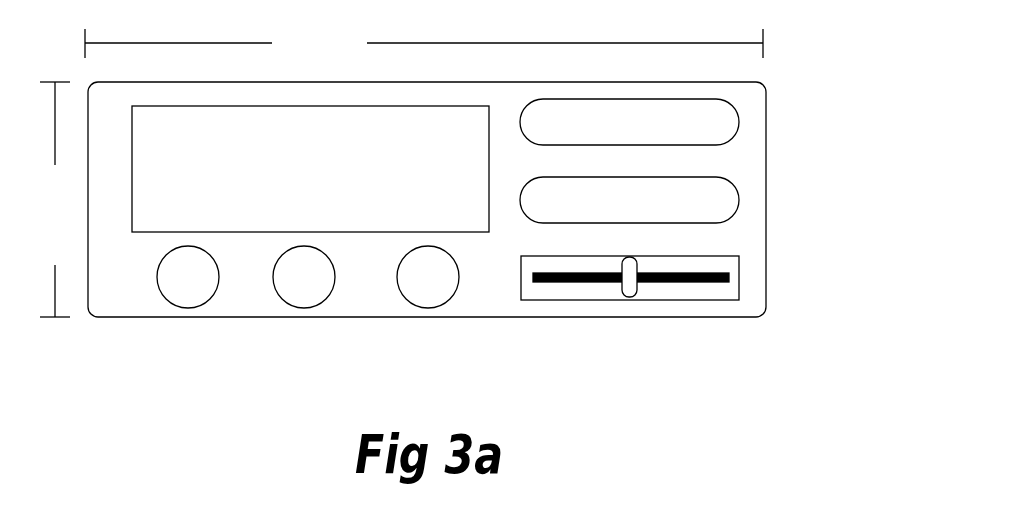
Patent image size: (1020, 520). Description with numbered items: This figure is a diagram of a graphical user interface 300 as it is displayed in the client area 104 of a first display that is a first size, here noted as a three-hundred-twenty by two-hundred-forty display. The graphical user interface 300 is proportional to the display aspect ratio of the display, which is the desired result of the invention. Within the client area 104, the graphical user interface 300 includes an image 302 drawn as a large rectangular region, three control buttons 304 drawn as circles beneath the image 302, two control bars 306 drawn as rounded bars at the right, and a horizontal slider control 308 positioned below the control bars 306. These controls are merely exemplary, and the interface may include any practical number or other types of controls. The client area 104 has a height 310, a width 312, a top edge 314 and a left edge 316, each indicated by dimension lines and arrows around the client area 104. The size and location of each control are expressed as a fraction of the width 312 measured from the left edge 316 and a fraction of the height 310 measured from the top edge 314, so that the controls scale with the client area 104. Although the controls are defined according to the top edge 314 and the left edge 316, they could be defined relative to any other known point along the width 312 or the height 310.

The graphical user interface 300 is at (747, 238).
The image 302 is at (292, 180).
The control buttons 304 is at (398, 283).
The control bars 306 is at (608, 136).
The horizontal slider control 308 is at (627, 298).
The height 310 is at (297, 67).
The width 312 is at (72, 224).
The top edge 314 is at (785, 83).
The left edge 316 is at (87, 342).
The client area 104 is at (445, 408).